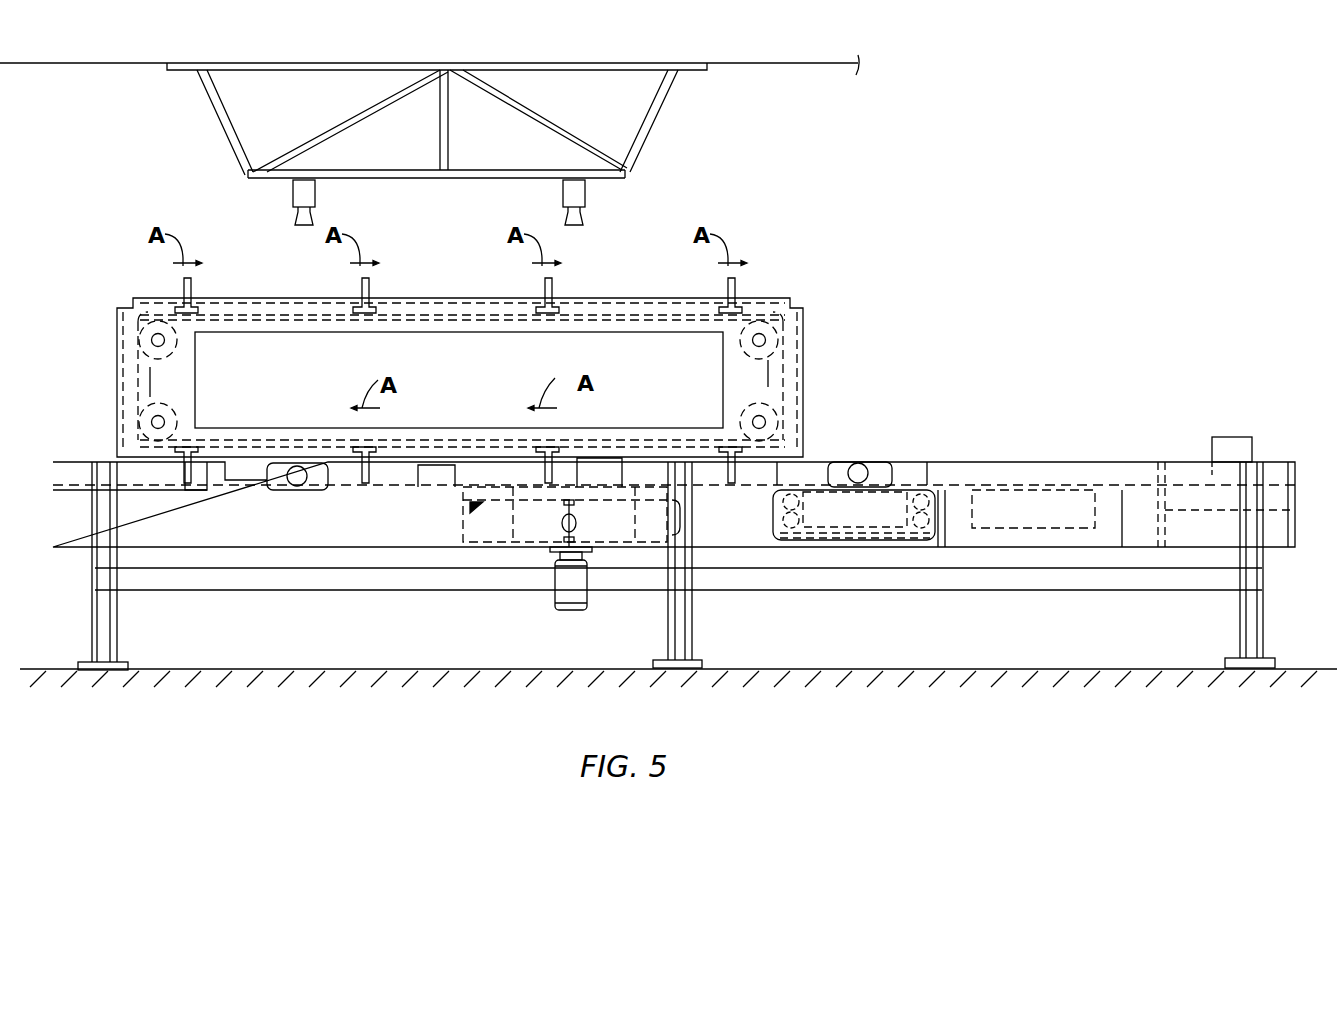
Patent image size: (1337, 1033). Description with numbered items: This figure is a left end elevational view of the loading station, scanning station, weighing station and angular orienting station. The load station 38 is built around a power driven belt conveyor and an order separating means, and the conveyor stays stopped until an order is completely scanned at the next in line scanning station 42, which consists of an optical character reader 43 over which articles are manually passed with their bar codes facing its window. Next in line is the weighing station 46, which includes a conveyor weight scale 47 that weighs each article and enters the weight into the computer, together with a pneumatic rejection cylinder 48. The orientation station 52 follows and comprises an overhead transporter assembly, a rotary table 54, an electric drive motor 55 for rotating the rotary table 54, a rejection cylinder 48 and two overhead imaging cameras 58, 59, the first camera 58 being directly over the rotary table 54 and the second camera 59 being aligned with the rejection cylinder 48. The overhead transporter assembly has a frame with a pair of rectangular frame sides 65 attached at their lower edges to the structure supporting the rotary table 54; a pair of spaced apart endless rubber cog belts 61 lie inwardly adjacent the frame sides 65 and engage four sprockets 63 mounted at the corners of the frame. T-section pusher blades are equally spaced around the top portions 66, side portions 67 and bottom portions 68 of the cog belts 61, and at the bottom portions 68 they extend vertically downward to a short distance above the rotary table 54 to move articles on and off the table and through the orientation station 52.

The load station 38 is at (1243, 422).
The scanning station 42 is at (1017, 420).
The optical character reader 43 is at (1037, 528).
The weighing station 46 is at (903, 413).
The conveyor weight scale 47 is at (893, 538).
The pneumatic rejection cylinder 48 is at (298, 490).
The orientation station 52 is at (459, 348).
The rotary table 54 is at (463, 515).
The electric drive motor 55 is at (565, 612).
The overhead imaging camera 58 is at (587, 195).
The overhead imaging camera 59 is at (293, 207).
The endless rubber cog belts 61 is at (318, 322).
The sprockets 63 is at (140, 345).
The frame sides 65 is at (518, 332).
The top portions 66 is at (480, 303).
The side portions 67 is at (130, 388).
The bottom portions 68 is at (327, 445).